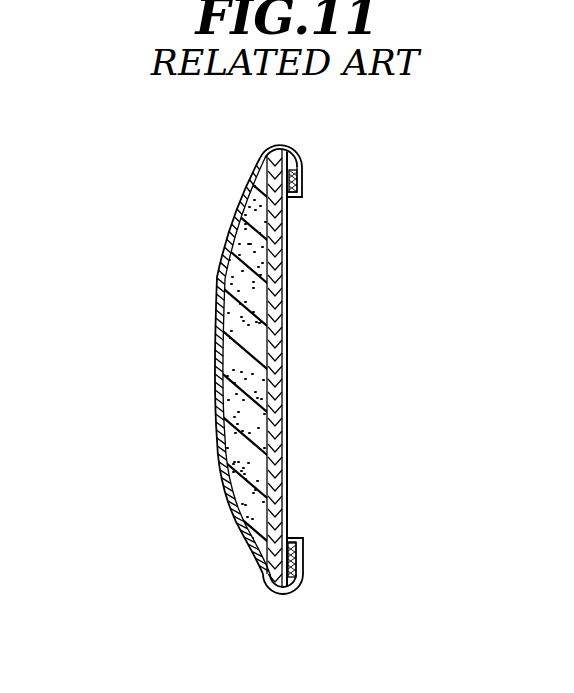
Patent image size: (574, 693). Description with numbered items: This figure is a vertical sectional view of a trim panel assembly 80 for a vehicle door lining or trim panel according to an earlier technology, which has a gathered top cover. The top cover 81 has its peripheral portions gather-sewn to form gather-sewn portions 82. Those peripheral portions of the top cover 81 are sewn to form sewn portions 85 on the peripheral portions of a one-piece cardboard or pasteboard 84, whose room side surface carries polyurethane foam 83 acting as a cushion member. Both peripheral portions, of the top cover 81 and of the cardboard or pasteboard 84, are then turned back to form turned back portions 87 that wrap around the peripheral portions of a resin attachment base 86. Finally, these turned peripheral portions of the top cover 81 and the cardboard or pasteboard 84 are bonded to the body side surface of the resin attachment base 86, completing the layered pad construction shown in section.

The trim panel assembly 80 is at (176, 340).
The top cover 81 is at (219, 263).
The gather-sewn portions 82 is at (304, 165).
The polyurethane foam 83 is at (233, 440).
The cardboard or pasteboard 84 is at (274, 348).
The sewn portions 85 is at (303, 183).
The resin attachment base 86 is at (282, 393).
The turned back portions 87 is at (273, 146).